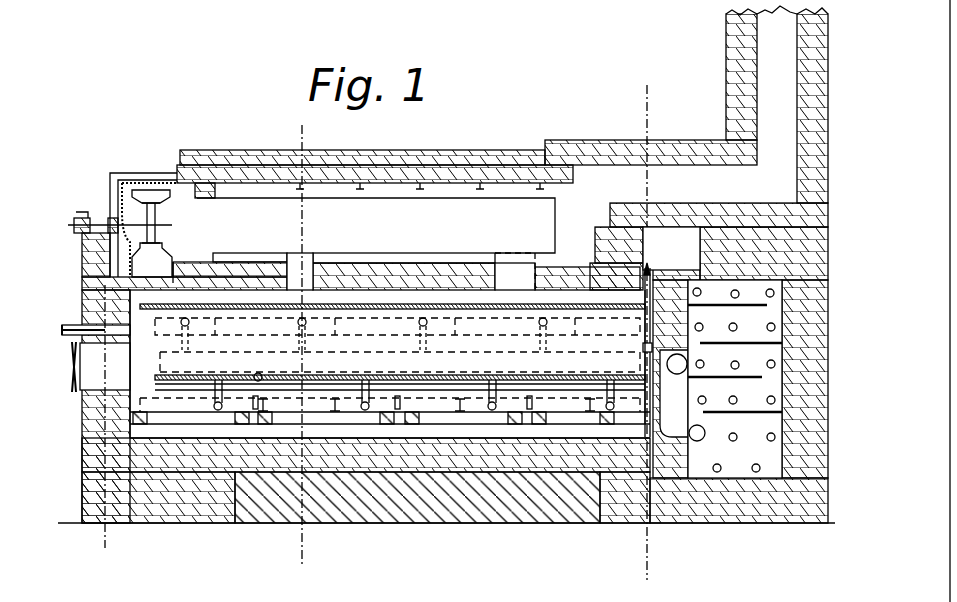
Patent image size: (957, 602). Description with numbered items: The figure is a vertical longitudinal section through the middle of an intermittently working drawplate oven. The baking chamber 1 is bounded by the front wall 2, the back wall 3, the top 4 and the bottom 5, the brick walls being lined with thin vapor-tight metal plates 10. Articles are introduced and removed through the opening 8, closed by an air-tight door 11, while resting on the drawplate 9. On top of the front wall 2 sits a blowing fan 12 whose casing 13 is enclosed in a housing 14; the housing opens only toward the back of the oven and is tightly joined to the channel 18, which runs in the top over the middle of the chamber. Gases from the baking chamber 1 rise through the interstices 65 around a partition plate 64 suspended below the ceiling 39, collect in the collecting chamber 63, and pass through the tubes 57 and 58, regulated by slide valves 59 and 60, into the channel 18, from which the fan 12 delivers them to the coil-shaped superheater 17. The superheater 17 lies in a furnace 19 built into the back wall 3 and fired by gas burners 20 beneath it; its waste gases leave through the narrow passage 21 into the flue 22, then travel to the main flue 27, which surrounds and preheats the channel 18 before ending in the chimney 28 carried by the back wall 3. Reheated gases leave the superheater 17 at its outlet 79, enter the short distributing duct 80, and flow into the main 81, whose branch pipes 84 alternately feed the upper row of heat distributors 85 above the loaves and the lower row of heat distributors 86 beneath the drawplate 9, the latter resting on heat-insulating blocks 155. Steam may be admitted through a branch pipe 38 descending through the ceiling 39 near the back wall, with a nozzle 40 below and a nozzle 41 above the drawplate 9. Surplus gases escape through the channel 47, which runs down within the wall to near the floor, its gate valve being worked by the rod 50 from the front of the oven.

The baking chamber 1 is at (387, 364).
The front wall 2 is at (88, 445).
The back wall 3 is at (825, 365).
The top 4 is at (415, 152).
The bottom 5 is at (78, 300).
The opening 8 is at (105, 366).
The drawplate 9 is at (158, 377).
The plates 10 is at (390, 427).
The door 11 is at (74, 362).
The blowing fan 12 is at (165, 205).
The casing 13 is at (148, 182).
The housing 14 is at (127, 190).
The coil-shaped superheater 17 is at (770, 400).
The channel 18 is at (364, 240).
The furnace 19 is at (771, 379).
The gas burners 20 is at (720, 468).
The narrow passage 21 is at (700, 275).
The flue 22 is at (671, 248).
The main flue 27 is at (352, 185).
The chimney 28 is at (770, 65).
The branch pipe 38 is at (652, 264).
The ceiling 39 is at (574, 290).
The nozzle 40 is at (645, 405).
The nozzle 41 is at (643, 348).
The channel 47 is at (92, 486).
The rod 50 is at (95, 320).
The tube 57 is at (300, 271).
The tube 58 is at (515, 271).
The slide valve 59 is at (332, 291).
The slide valve 60 is at (538, 292).
The collecting chamber 63 is at (392, 299).
The partition plate 64 is at (426, 293).
The interstices 65 is at (138, 310).
The outlet 79 is at (703, 436).
The distributing duct 80 is at (670, 379).
The main 81 is at (258, 368).
The branch pipes 84 is at (218, 378).
The upper row of heat distributors 85 is at (482, 326).
The lower row of heat distributors 86 is at (318, 420).
The blocks 155 is at (140, 415).